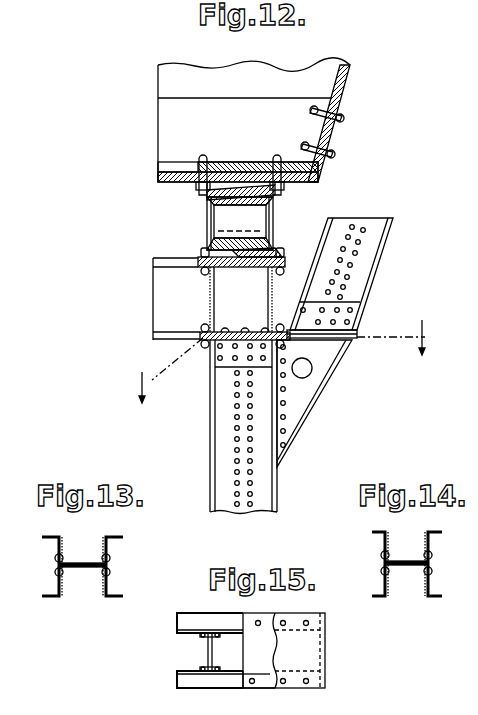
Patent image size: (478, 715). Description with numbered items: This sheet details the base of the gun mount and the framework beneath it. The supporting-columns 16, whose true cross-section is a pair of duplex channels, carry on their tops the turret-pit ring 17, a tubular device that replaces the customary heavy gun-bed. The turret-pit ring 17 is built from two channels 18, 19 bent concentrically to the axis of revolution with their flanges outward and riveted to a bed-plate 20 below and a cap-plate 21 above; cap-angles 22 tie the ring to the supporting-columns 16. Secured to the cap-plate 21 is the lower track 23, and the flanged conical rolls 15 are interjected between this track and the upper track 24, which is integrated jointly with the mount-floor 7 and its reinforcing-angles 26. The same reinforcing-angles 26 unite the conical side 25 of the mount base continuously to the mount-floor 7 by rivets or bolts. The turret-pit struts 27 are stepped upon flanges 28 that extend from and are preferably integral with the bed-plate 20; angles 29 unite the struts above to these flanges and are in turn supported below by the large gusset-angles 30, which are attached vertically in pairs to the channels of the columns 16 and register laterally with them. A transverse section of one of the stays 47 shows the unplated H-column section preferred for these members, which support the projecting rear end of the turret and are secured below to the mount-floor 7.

In FIG. 12, the mount-floor 7 is at (186, 172).
In FIG. 12, the flanged conical rolls 15 is at (282, 301).
In FIG. 12, the supporting-columns 16 is at (210, 438).
In FIG. 14, the supporting-columns 16 is at (384, 577).
In FIG. 15, the supporting-columns 16 is at (160, 687).
In FIG. 12, the turret-pit ring 17 is at (153, 300).
In FIG. 12, the channel 18 is at (210, 294).
In FIG. 12, the channel 19 is at (268, 294).
In FIG. 12, the bed-plate 20 is at (153, 335).
In FIG. 12, the cap-plate 21 is at (153, 263).
In FIG. 12, the cap-angles 22 is at (228, 361).
In FIG. 12, the lower track 23 is at (204, 254).
In FIG. 12, the upper track 24 is at (200, 190).
In FIG. 12, the side 25 is at (352, 82).
In FIG. 12, the reinforcing-angles 26 is at (320, 132).
In FIG. 12, the turret-pit struts 27 is at (377, 262).
In FIG. 12, the flanges 28 is at (357, 333).
In FIG. 15, the flanges 28 is at (284, 650).
In FIG. 12, the angles 29 is at (362, 302).
In FIG. 12, the gusset-angles 30 is at (314, 403).
In FIG. 15, the gusset-angles 30 is at (266, 672).
In FIG. 13, the stays 47 is at (58, 568).